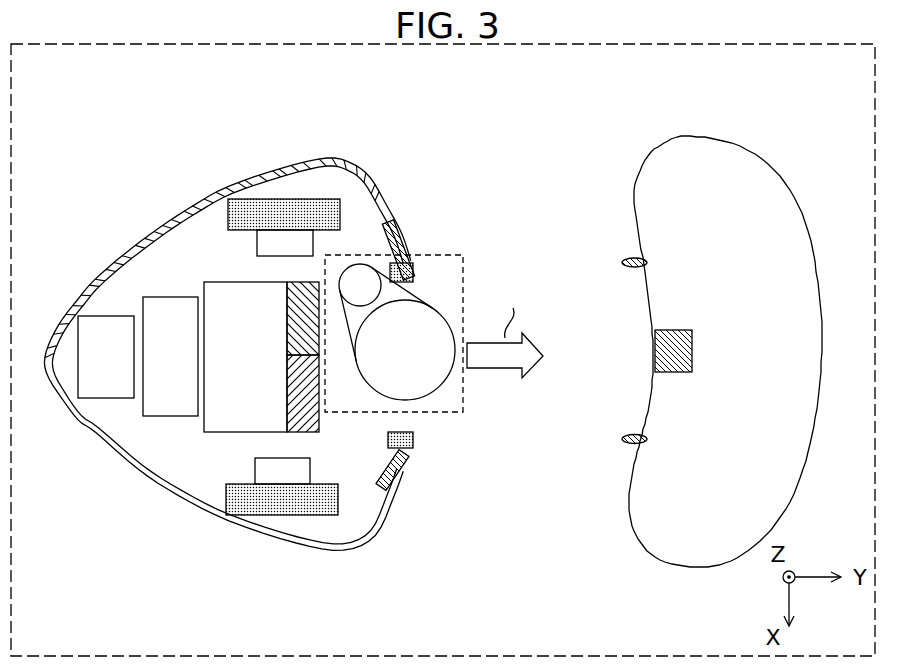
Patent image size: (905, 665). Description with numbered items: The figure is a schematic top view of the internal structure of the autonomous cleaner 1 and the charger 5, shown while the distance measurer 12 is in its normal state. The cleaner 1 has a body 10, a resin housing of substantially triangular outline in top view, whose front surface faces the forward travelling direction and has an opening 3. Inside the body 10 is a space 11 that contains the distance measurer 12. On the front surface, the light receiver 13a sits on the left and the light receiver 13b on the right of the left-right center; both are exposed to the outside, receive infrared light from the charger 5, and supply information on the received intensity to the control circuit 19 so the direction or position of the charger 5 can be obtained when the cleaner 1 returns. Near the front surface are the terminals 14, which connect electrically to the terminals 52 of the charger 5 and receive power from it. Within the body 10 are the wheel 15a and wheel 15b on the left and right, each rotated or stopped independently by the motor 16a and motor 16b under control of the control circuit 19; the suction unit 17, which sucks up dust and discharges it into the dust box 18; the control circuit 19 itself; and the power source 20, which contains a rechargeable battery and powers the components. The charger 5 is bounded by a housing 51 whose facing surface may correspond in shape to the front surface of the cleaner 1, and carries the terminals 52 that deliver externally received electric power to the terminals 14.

The cleaner 1 is at (347, 133).
The opening 3 is at (420, 292).
The charger 5 is at (795, 128).
The body 10 is at (316, 166).
The space 11 is at (375, 522).
The distance measurer 12 is at (443, 393).
The light receiver 13a is at (404, 232).
The light receiver 13b is at (403, 480).
The terminals 14 is at (413, 272).
The wheel 15a is at (247, 203).
The wheel 15b is at (253, 507).
The motor 16a is at (257, 243).
The motor 16b is at (255, 466).
The suction unit 17 is at (300, 282).
The dust box 18 is at (223, 282).
The control circuit 19 is at (168, 297).
The power source 20 is at (103, 317).
The housing 51 is at (718, 155).
The terminals 52 is at (622, 437).